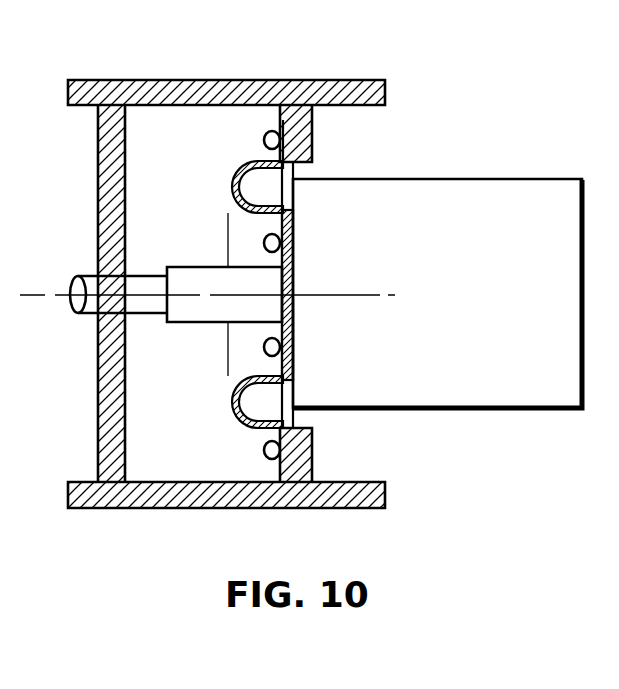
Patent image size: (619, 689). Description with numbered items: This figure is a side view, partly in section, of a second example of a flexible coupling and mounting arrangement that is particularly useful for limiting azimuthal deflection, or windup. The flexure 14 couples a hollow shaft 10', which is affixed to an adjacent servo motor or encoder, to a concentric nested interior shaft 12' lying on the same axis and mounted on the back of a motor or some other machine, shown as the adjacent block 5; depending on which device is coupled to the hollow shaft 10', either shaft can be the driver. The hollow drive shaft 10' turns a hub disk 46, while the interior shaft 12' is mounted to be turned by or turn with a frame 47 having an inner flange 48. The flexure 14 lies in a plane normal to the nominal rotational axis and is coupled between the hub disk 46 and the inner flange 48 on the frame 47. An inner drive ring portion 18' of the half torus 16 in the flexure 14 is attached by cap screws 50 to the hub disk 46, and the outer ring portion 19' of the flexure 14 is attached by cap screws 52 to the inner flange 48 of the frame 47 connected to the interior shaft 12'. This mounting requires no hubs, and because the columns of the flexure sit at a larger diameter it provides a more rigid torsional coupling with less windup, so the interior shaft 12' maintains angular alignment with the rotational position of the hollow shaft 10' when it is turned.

The shaker/armature unit 5 is at (503, 180).
The hollow shaft 10' is at (218, 319).
The interior shaft 12' is at (97, 324).
The flexure 14 is at (226, 295).
The half torus 16 is at (232, 197).
The inner drive ring portion 18' is at (320, 295).
The outer ring portion 19' is at (303, 95).
The hub disk 46 is at (293, 328).
The frame 47 is at (210, 80).
The inner flange 48 is at (312, 137).
The cap screws 50 is at (264, 243).
The cap screws 52 is at (264, 137).